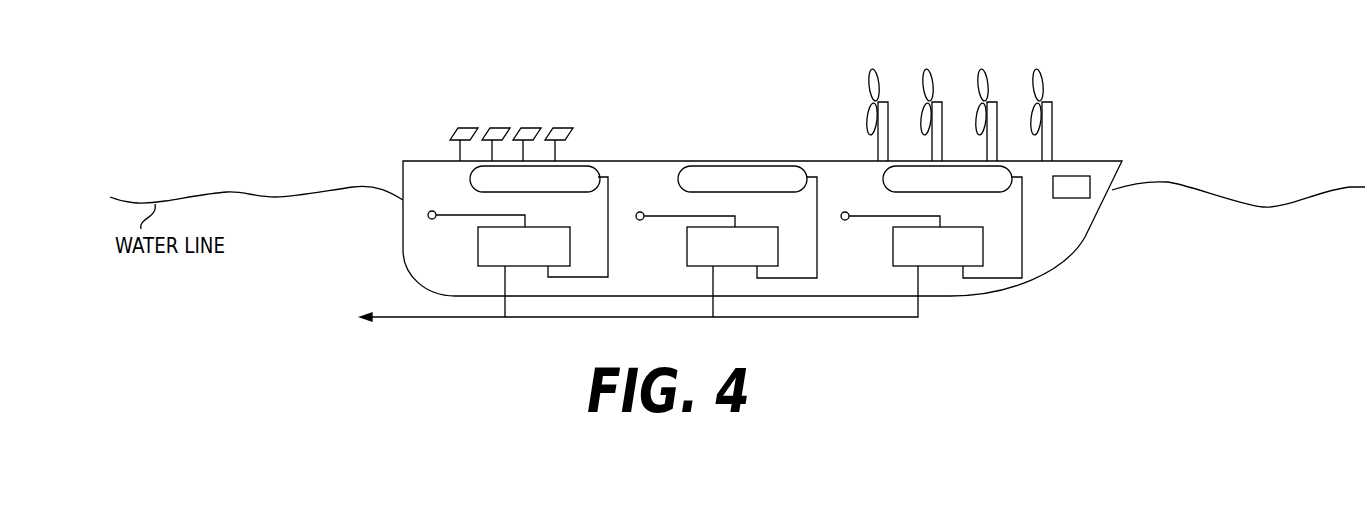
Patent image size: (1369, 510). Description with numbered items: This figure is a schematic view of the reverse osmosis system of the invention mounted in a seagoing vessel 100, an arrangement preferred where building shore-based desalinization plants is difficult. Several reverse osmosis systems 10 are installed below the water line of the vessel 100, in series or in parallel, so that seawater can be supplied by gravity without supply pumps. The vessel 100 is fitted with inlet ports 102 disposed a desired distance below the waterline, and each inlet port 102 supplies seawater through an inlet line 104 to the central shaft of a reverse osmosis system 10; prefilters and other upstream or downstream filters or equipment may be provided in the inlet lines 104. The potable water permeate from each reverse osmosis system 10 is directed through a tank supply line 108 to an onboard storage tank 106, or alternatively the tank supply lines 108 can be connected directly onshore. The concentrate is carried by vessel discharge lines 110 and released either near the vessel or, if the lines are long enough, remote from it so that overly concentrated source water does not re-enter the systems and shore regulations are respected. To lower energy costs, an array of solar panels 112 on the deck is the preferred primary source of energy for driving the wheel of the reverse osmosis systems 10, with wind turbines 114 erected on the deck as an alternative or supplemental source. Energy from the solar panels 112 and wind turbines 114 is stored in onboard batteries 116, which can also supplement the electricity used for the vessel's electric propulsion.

The reverse osmosis system 10 is at (538, 256).
The vessel 100 is at (1157, 133).
The inlet port 102 is at (433, 220).
The inlet line 104 is at (462, 215).
The onboard storage tank 106 is at (596, 166).
The tank supply line 108 is at (612, 214).
The vessel discharge line 110 is at (507, 308).
The solar panel 112 is at (469, 128).
The wind turbine 114 is at (877, 70).
The battery 116 is at (1072, 199).